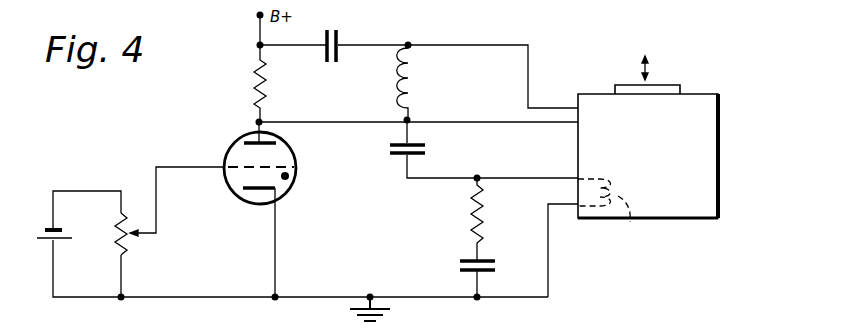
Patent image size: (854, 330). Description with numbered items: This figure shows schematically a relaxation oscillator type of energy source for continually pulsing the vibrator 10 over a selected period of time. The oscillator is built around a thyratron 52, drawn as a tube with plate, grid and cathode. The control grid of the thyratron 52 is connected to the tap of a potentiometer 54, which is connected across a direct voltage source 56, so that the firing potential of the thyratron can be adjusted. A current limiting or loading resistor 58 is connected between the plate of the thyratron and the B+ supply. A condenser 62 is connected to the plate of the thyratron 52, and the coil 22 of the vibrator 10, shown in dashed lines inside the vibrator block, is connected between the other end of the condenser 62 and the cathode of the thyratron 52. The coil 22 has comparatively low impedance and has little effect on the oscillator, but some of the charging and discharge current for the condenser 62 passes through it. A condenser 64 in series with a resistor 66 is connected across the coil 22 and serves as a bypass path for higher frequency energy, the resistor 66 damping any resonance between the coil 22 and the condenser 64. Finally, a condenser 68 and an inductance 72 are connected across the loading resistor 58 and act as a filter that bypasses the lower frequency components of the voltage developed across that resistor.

The vibrator 10 is at (722, 177).
The coil 22 is at (631, 226).
The thyratron 52 is at (297, 173).
The potentiometer 54 is at (128, 236).
The direct voltage source 56 is at (43, 240).
The loading resistor 58 is at (250, 90).
The condenser 62 is at (422, 143).
The condenser 64 is at (482, 258).
The resistor 66 is at (470, 222).
The condenser 68 is at (339, 43).
The inductance 72 is at (420, 81).